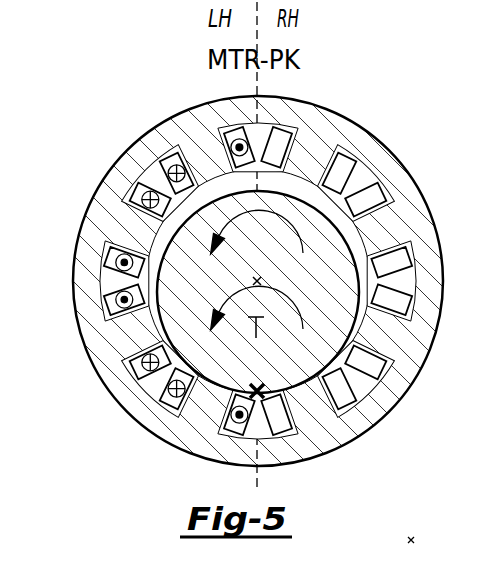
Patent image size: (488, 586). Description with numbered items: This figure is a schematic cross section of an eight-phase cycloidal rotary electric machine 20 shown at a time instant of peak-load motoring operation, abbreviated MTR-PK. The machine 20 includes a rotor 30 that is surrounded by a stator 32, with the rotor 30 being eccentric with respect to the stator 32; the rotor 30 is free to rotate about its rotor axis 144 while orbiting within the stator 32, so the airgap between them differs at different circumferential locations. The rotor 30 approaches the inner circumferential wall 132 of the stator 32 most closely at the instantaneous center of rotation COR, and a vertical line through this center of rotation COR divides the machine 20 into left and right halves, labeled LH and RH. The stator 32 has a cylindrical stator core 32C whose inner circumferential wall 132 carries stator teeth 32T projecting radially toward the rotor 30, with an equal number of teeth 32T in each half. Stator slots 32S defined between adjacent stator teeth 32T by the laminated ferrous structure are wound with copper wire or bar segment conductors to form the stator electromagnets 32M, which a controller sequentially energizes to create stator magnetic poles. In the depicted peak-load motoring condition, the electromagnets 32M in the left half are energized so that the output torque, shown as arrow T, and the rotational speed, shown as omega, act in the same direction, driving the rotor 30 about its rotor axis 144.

The rotary electric machine 20 is at (244, 273).
The rotor 30 is at (330, 295).
The stator 32 is at (244, 285).
The stator core 32C is at (397, 398).
The stator teeth 32T is at (373, 235).
The stator slots 32S is at (150, 175).
The stator electromagnets 32M is at (248, 265).
The inner circumferential wall 132 is at (370, 174).
The rotor axis 144 is at (252, 279).
The center of rotation COR is at (248, 394).